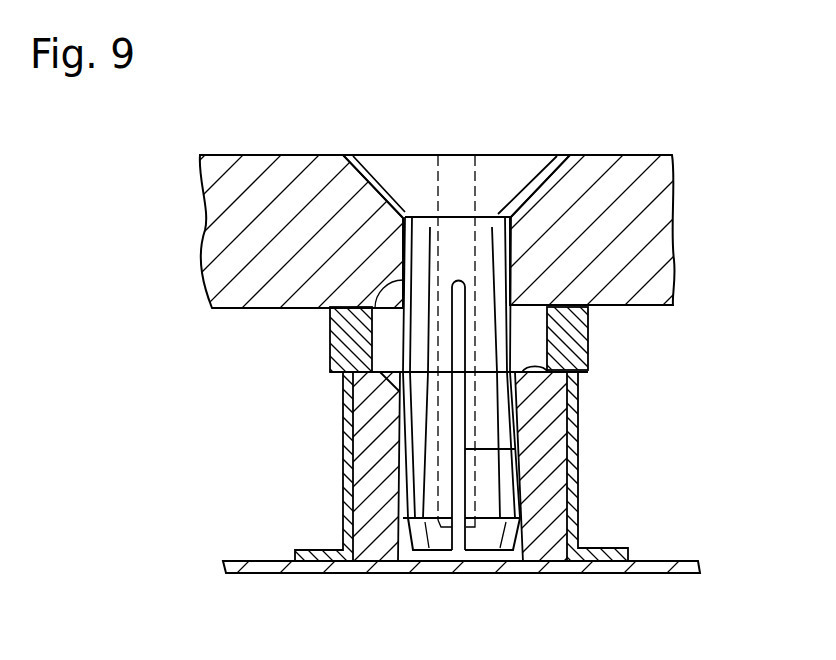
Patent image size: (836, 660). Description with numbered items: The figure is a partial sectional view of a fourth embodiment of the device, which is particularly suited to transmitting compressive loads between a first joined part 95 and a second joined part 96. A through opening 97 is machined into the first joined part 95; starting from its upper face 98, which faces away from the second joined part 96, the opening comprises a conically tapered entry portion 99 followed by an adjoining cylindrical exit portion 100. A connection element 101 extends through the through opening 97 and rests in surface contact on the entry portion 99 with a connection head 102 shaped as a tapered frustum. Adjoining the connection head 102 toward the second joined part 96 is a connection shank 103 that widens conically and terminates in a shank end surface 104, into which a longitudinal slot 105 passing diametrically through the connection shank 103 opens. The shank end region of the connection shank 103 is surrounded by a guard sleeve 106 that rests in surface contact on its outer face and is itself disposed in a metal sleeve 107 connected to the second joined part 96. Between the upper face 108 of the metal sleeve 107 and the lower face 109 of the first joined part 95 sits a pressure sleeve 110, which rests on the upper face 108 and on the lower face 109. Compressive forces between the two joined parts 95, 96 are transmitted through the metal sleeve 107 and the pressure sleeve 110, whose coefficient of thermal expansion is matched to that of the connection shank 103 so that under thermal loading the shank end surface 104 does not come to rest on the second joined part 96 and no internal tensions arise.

The first joined part 95 is at (660, 208).
The second joined part 96 is at (662, 563).
The through opening 97 is at (327, 338).
The upper face 98 is at (618, 153).
The conically tapered entry portion 99 is at (500, 228).
The cylindrical exit portion 100 is at (488, 207).
The connection element 101 is at (398, 138).
The connection head 102 is at (388, 153).
The connection shank 103 is at (420, 403).
The shank end surface 104 is at (422, 560).
The longitudinal slot 105 is at (468, 455).
The guard sleeve 106 is at (550, 483).
The metal sleeve 107 is at (572, 518).
The upper face of the metal sleeve 108 is at (582, 382).
The lower face 109 is at (250, 308).
The pressure sleeve 110 is at (572, 347).